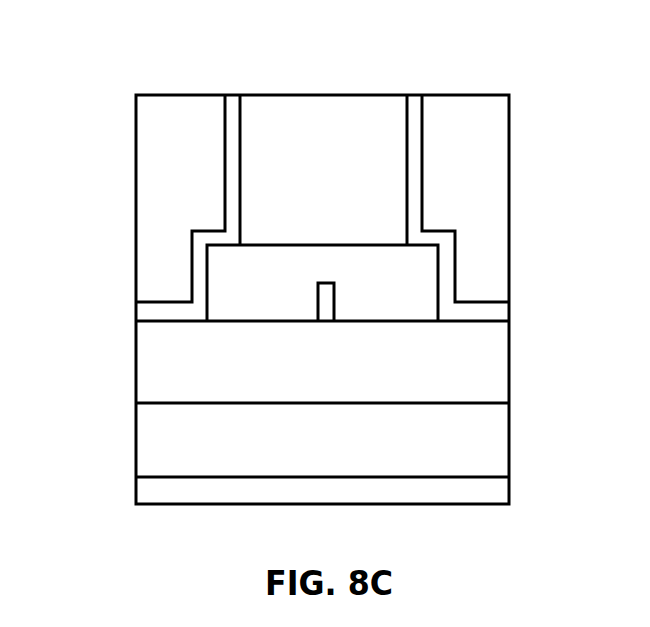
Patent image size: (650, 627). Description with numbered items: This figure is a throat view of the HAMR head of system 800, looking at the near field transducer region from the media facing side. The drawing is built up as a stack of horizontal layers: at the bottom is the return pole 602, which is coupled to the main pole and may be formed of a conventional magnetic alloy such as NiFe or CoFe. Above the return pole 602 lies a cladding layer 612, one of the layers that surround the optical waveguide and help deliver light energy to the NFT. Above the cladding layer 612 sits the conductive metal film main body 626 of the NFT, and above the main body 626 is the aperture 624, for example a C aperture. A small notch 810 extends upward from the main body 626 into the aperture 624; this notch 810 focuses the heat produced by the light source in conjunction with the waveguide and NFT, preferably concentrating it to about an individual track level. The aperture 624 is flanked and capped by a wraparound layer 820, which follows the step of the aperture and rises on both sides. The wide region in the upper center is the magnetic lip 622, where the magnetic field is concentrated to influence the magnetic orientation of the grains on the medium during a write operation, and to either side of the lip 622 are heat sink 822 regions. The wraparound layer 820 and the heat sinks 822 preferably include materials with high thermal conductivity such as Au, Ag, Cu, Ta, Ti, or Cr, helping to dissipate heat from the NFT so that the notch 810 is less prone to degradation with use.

The system 800 is at (76, 91).
The return pole 602 is at (322, 490).
The cladding layer 612 is at (322, 432).
The main body 626 is at (322, 350).
The aperture 624 is at (407, 321).
The notch 810 is at (335, 315).
The wraparound layer 820 is at (136, 307).
The magnetic lip 622 is at (323, 170).
The heat sink 822 is at (322, 198).